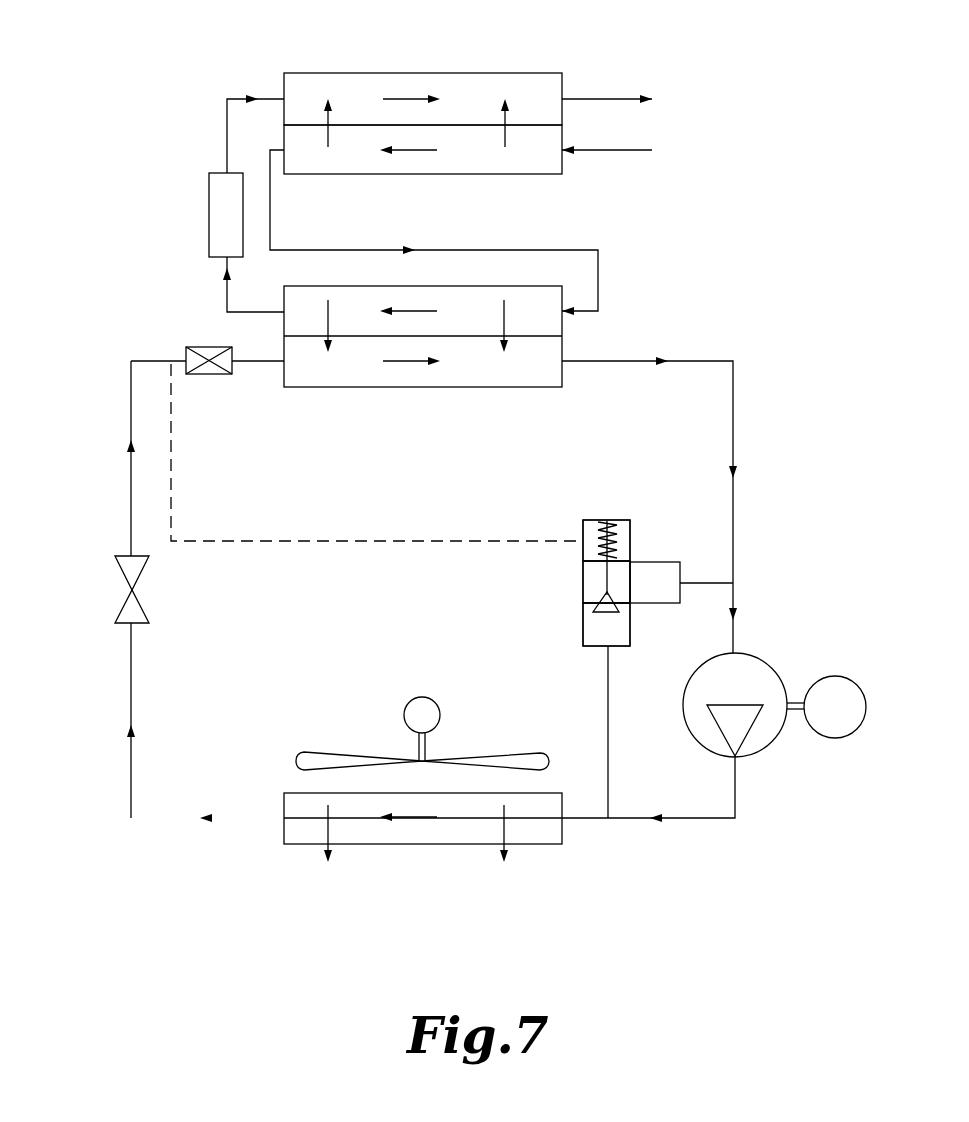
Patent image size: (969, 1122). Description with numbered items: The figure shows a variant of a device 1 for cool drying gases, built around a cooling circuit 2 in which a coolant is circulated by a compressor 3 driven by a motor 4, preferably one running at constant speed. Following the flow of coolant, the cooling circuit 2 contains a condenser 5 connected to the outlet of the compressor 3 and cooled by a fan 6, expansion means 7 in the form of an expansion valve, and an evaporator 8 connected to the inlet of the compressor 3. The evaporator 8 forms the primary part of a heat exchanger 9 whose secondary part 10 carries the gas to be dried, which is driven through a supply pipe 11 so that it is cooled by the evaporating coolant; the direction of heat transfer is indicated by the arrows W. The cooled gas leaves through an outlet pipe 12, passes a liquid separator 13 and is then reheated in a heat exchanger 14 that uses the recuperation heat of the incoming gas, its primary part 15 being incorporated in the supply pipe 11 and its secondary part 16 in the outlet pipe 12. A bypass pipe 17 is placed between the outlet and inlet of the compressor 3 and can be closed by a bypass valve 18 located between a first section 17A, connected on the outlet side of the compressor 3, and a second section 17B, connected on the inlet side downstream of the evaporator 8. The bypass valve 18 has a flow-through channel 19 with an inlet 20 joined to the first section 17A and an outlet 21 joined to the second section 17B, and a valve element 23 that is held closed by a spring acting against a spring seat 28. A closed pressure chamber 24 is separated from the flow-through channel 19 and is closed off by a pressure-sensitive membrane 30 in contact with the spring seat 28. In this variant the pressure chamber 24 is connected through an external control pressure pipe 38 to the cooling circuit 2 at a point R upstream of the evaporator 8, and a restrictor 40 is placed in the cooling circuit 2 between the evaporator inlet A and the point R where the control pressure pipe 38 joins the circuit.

The device for cool drying gases 1 is at (800, 202).
The cooling circuit 2 is at (750, 414).
The compressor 3 is at (745, 668).
The motor 4 is at (835, 738).
The condenser 5 is at (542, 845).
The fan 6 is at (386, 760).
The expansion means 7 is at (140, 572).
The evaporator 8 is at (340, 378).
The heat exchanger 9 is at (473, 402).
The water section of heat exchanger 10 is at (503, 325).
The supply pipe 11 is at (598, 275).
The outlet pipe 12 is at (227, 140).
The liquid separator 13 is at (222, 207).
The heat exchanger 14 is at (412, 55).
The primary part 15 is at (523, 165).
The secondary part 16 is at (487, 95).
The bypass pipe 17 is at (585, 695).
The first section of the bypass pipe 17A is at (608, 780).
The second section of the bypass pipe 17B is at (730, 583).
The bypass valve 18 is at (565, 602).
The flow-through channel 19 is at (593, 583).
The inlet 20 is at (583, 645).
The outlet 21 is at (678, 562).
The valve element 23 is at (616, 608).
The pressure chamber 24 is at (590, 538).
The spring seat 28 is at (614, 522).
The membrane 30 is at (598, 522).
The external control pressure pipe 38 is at (340, 540).
The restrictor 40 is at (209, 376).